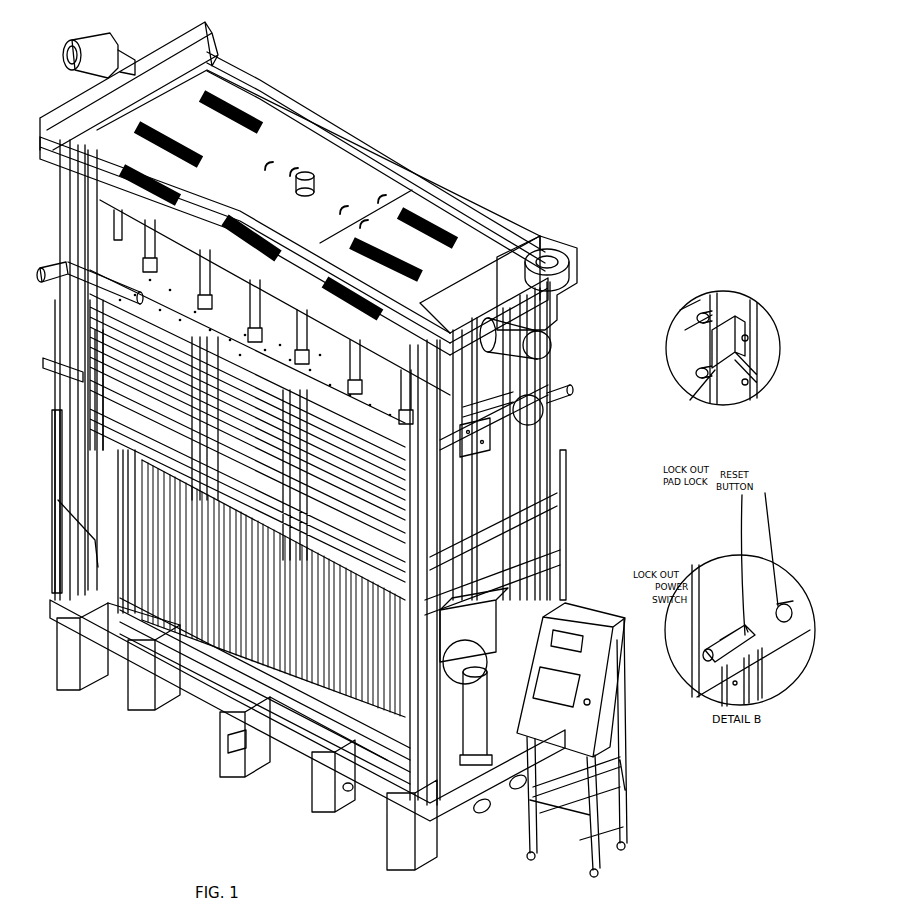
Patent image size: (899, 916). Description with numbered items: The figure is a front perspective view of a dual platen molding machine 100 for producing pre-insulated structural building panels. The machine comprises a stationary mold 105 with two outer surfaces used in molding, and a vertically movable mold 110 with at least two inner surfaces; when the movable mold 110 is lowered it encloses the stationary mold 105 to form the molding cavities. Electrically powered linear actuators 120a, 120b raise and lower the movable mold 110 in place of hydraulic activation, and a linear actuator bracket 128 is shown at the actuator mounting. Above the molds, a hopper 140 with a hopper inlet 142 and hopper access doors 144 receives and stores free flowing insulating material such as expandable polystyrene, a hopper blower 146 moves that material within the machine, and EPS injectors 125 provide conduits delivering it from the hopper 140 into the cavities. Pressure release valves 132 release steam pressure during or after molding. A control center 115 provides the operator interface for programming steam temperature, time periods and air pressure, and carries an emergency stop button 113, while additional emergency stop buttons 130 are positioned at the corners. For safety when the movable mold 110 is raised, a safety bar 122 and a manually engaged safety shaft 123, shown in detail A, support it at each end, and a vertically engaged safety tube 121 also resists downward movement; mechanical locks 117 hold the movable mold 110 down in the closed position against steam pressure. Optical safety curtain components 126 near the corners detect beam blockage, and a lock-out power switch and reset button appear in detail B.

The dual platen molding machine 100 is at (594, 118).
The stationary mold 105 is at (245, 600).
The movable mold 110 is at (262, 497).
The emergency stop button 113 is at (590, 705).
The control center 115 is at (618, 623).
The mechanical lock 117 is at (236, 745).
The linear actuator 120a is at (552, 346).
The linear actuator 120b is at (102, 57).
The safety tube 121 is at (410, 800).
The safety bar 122 is at (737, 345).
The safety shaft 123 is at (47, 270).
The injector 125 is at (552, 453).
The optical safety curtain component 126 is at (60, 605).
The linear actuator bracket 128 is at (520, 540).
The emergency stop buttons 130 is at (343, 789).
The pressure release valve 132 is at (505, 840).
The hopper 140 is at (352, 176).
The hopper inlet 142 is at (312, 174).
The hopper access door 144 is at (270, 112).
The hopper blower 146 is at (580, 262).